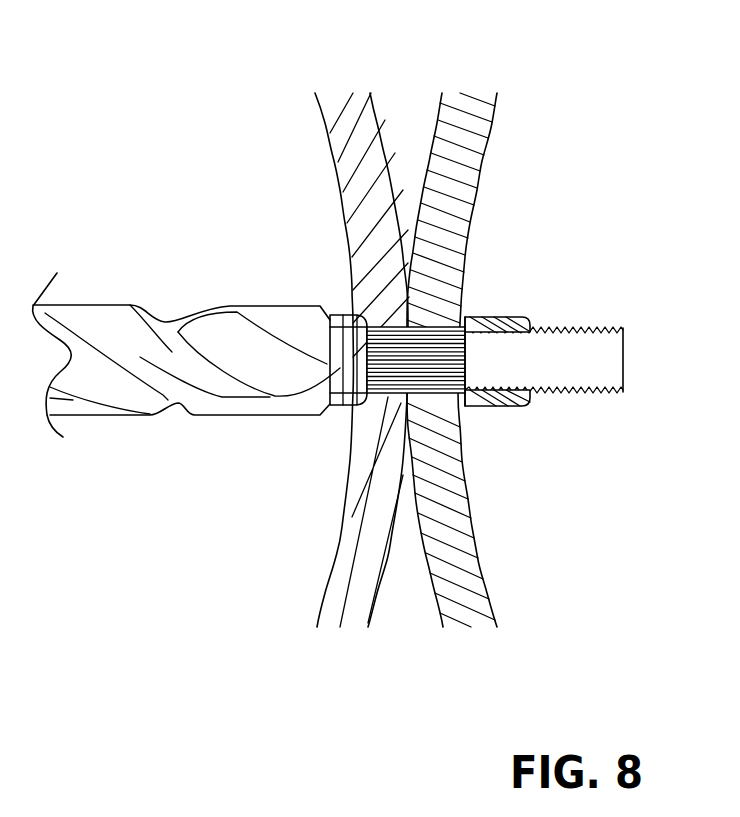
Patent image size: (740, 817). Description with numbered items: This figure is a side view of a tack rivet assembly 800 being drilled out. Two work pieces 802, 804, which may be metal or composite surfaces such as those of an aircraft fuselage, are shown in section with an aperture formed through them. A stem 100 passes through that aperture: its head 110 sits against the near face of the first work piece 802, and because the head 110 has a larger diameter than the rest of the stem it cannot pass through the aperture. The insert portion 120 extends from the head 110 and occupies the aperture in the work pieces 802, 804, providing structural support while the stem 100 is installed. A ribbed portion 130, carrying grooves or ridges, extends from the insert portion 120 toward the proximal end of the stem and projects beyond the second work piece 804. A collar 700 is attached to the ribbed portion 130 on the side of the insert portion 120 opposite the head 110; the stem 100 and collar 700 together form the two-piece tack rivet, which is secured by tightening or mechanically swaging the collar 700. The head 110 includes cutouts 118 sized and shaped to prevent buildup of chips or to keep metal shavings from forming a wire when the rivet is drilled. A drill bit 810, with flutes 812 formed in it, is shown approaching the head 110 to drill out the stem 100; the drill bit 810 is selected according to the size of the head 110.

The installation environment with walls 800 is at (578, 76).
The work piece 802 is at (380, 241).
The work piece 804 is at (437, 257).
The drill bit 810 is at (130, 307).
The flutes 812 is at (122, 392).
The stem 100 is at (586, 298).
The head 110 is at (333, 335).
The cutouts 118 is at (340, 322).
The insert portion 120 is at (373, 393).
The collar 700 is at (485, 395).
The ribbed portion 130 is at (612, 386).